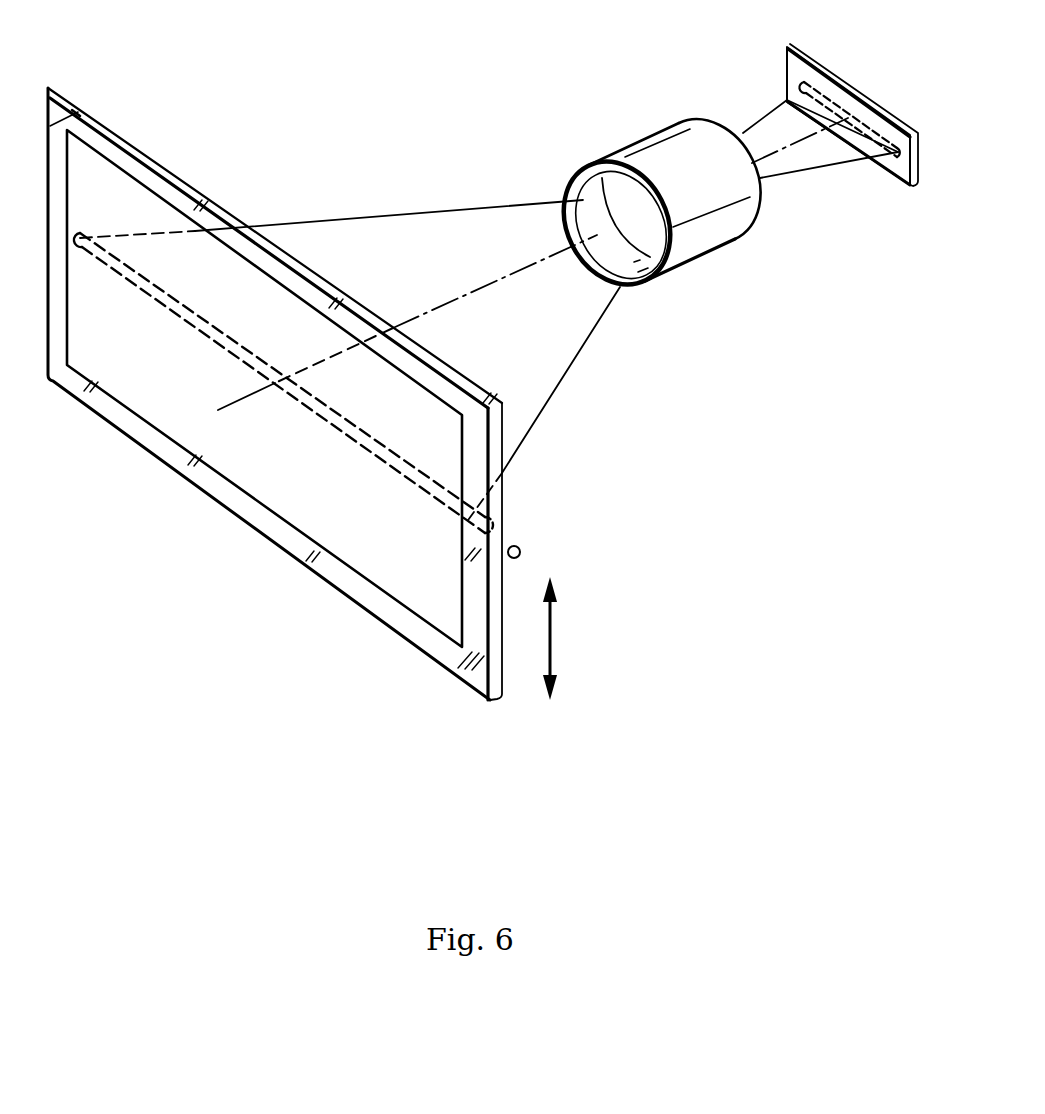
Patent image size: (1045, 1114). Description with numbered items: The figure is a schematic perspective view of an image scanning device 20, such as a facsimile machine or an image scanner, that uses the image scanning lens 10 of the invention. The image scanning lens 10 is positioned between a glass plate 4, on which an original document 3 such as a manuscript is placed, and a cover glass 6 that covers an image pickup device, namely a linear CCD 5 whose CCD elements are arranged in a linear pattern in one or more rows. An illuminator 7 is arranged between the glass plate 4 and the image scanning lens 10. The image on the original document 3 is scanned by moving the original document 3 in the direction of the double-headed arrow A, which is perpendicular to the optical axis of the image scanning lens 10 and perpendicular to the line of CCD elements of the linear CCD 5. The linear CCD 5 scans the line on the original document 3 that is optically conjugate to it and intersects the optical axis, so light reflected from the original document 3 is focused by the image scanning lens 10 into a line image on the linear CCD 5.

The image scanning device 20 is at (460, 104).
The original document 3 is at (371, 541).
The glass plate 4 is at (417, 634).
The linear CCD 5 is at (842, 93).
The cover glass 6 is at (787, 63).
The illuminator 7 is at (521, 548).
The image scanning lens 10 is at (725, 222).